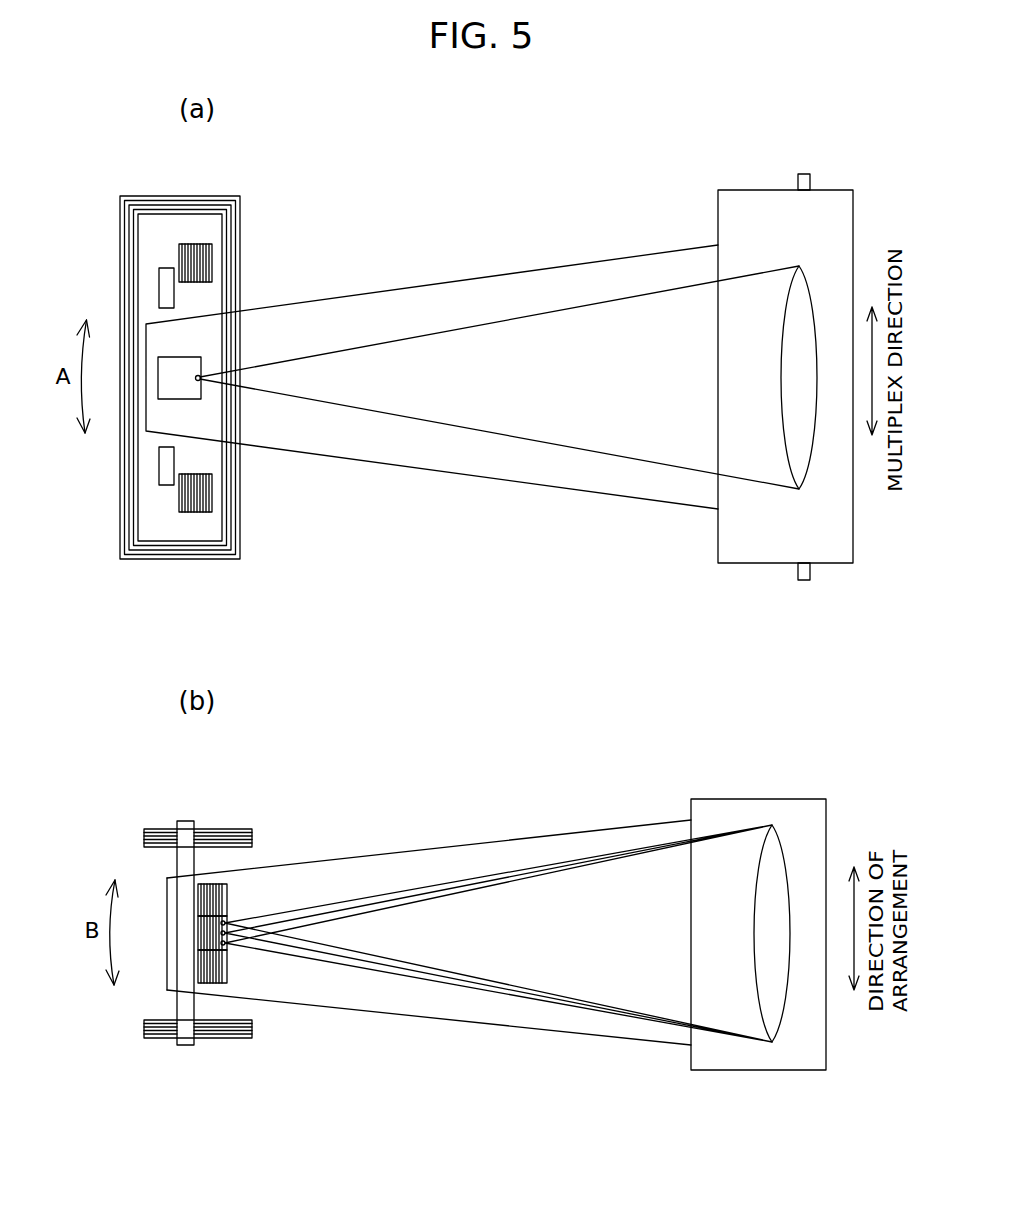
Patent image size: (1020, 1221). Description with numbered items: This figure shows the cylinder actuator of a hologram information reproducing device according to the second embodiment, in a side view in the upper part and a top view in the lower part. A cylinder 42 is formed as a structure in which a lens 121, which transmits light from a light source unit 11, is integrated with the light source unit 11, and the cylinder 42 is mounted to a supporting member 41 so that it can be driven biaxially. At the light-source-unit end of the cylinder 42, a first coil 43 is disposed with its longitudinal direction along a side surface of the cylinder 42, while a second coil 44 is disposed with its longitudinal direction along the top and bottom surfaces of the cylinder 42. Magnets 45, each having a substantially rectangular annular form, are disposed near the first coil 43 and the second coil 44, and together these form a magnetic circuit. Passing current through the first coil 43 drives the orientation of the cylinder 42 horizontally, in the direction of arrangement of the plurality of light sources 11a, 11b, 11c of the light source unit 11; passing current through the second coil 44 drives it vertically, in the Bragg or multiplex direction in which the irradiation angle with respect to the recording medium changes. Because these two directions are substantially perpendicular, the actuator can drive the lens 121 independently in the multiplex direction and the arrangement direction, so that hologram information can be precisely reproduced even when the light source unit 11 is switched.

The light source unit 11 is at (173, 385).
The light source 11a is at (229, 908).
The light source 11b is at (229, 933).
The light source 11c is at (230, 950).
The supporting member 41 is at (853, 530).
The cylinder 42 is at (522, 482).
The first coil 43 is at (241, 524).
The second coil 44 is at (202, 255).
The magnet 45 is at (167, 275).
The lens 121 is at (803, 440).